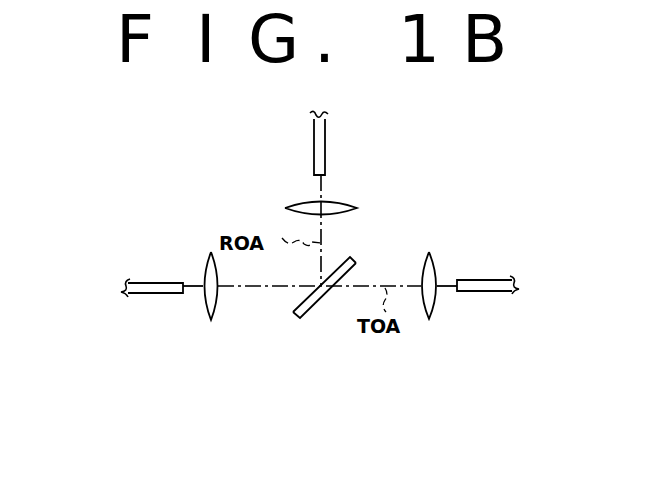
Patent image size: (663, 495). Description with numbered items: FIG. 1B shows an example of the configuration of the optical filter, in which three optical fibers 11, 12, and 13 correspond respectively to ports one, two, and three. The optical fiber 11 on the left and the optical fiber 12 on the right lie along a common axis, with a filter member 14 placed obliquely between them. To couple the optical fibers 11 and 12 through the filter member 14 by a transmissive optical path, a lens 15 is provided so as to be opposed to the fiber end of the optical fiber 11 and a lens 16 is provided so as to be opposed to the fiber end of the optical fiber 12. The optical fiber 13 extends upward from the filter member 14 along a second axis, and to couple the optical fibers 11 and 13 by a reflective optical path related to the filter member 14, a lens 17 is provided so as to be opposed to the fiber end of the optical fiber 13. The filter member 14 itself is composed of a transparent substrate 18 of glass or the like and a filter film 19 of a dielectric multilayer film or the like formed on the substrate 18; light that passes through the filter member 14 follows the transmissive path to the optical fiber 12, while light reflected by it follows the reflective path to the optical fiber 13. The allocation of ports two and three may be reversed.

The optical fiber 11 is at (150, 294).
The optical fiber 12 is at (488, 292).
The optical fiber 13 is at (325, 143).
The filter member 14 is at (308, 330).
The lens 15 is at (205, 264).
The lens 16 is at (436, 265).
The lens 17 is at (288, 208).
The transparent substrate 18 is at (324, 317).
The filter film 19 is at (292, 320).